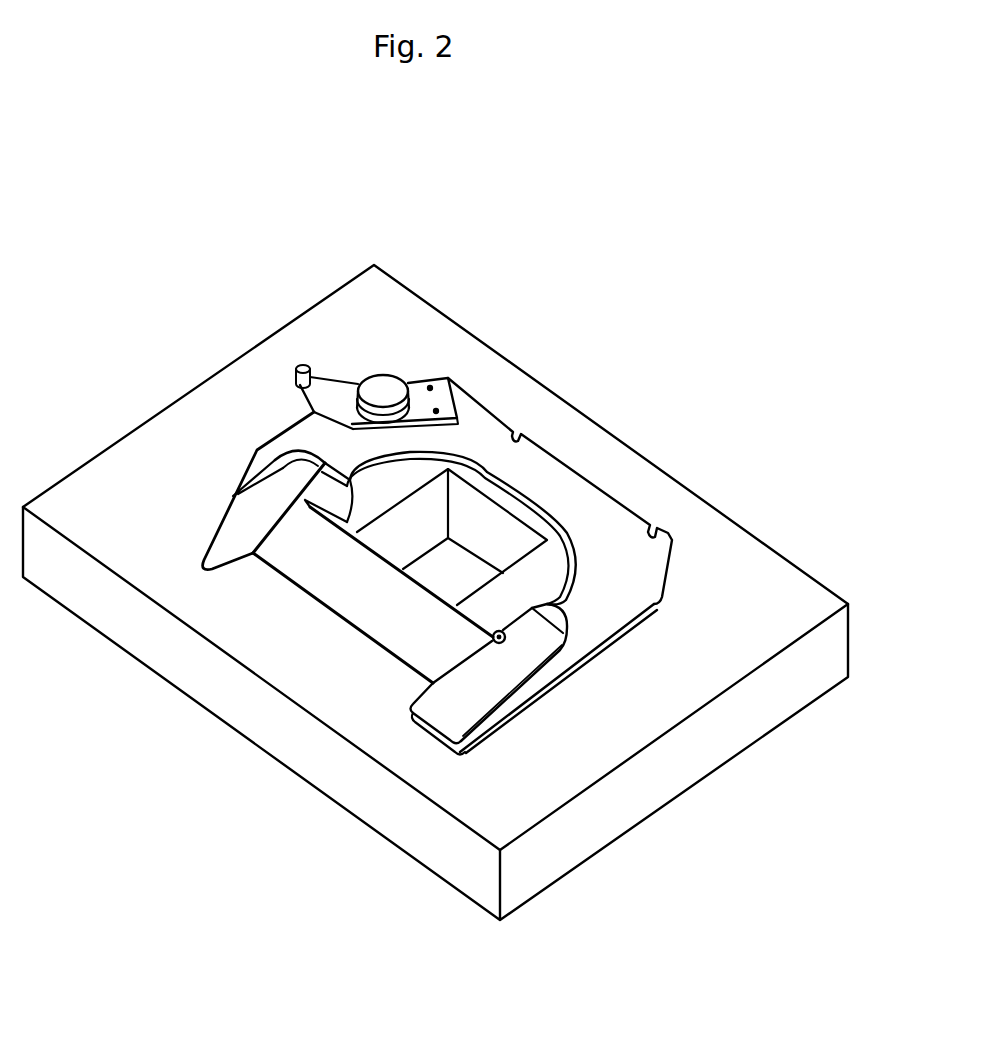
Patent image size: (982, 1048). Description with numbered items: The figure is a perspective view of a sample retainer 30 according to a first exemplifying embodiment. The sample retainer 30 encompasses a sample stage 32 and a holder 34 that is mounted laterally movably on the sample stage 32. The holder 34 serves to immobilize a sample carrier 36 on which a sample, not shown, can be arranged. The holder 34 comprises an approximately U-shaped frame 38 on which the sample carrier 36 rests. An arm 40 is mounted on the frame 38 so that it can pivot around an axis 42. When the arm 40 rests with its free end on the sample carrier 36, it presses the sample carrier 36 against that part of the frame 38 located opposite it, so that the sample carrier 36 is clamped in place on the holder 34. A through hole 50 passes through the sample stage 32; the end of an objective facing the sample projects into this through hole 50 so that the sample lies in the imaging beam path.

The sample retainer 30 is at (640, 198).
The sample stage 32 is at (737, 545).
The holder 34 is at (583, 487).
The sample carrier 36 is at (387, 627).
The frame 38 is at (636, 603).
The arm 40 is at (280, 450).
The axis 42 is at (383, 386).
The through hole 50 is at (457, 584).